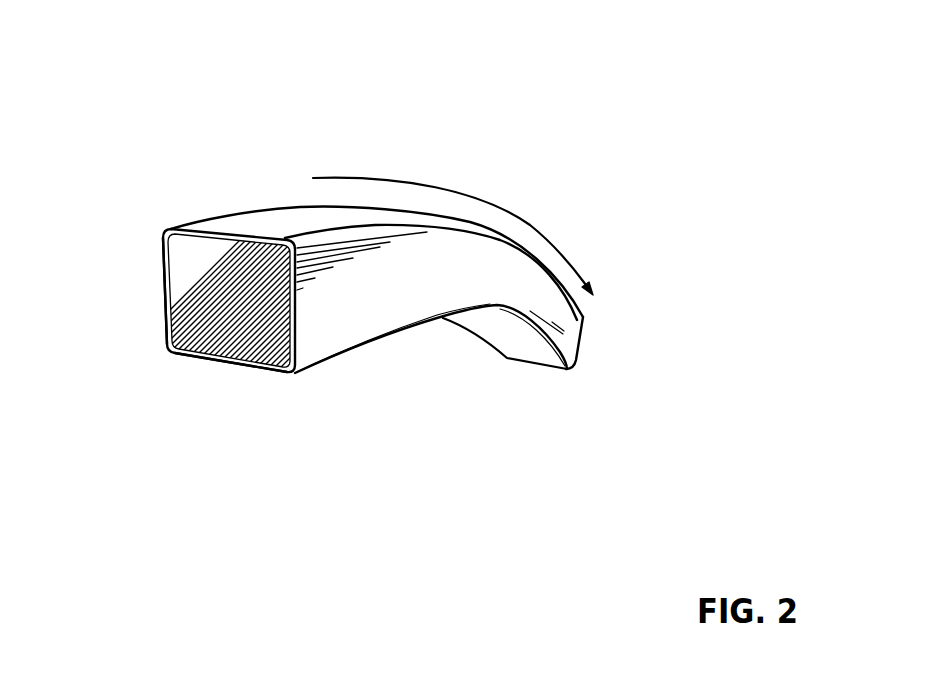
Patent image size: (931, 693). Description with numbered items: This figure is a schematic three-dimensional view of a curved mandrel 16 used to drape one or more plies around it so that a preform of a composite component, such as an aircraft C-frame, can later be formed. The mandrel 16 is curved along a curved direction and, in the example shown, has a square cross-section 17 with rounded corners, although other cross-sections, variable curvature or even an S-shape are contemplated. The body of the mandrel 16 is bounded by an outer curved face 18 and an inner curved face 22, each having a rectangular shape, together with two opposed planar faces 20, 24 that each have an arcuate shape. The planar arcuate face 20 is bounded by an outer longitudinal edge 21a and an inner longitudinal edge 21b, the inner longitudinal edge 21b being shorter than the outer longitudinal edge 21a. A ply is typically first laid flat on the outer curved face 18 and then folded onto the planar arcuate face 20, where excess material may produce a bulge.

The curved mandrel 16 is at (382, 237).
The square cross-section 17 is at (215, 244).
The outer curved face 18 is at (286, 217).
The planar arcuate face 20 is at (322, 343).
The outer longitudinal edge 21a is at (356, 231).
The inner longitudinal edge 21b is at (380, 332).
The inner curved face 22 is at (207, 362).
The planar face 24 is at (162, 297).